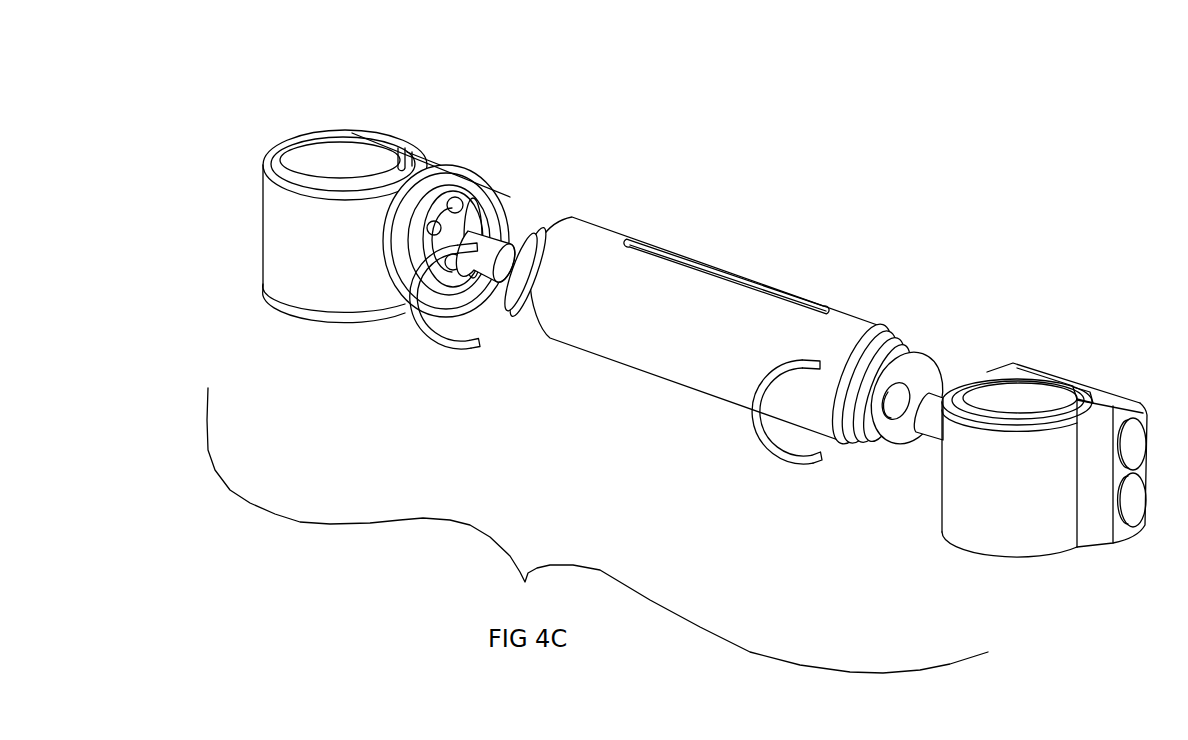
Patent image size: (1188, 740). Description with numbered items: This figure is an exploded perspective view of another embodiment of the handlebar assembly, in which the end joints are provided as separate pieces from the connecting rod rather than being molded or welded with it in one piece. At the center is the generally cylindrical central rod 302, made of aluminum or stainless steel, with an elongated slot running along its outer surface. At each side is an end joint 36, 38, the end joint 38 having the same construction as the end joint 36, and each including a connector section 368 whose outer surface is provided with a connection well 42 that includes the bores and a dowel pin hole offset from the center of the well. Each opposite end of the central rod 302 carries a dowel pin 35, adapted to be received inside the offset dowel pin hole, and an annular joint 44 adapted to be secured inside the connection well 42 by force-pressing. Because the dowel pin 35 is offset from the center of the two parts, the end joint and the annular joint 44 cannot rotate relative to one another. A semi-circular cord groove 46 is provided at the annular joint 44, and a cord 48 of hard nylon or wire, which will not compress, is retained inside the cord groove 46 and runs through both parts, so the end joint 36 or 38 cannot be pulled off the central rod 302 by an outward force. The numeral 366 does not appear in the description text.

The first clamp sleeve 366 is at (323, 133).
The end joint 38 is at (375, 145).
The connector section 368 is at (437, 163).
The connection well 42 is at (489, 216).
The dowel pin 35 is at (505, 242).
The annular joint 44 is at (527, 246).
The semi-circular cord groove 46 is at (523, 308).
The central rod 302 is at (737, 275).
The cord 48 is at (417, 333).
The end joint 36 is at (1043, 370).